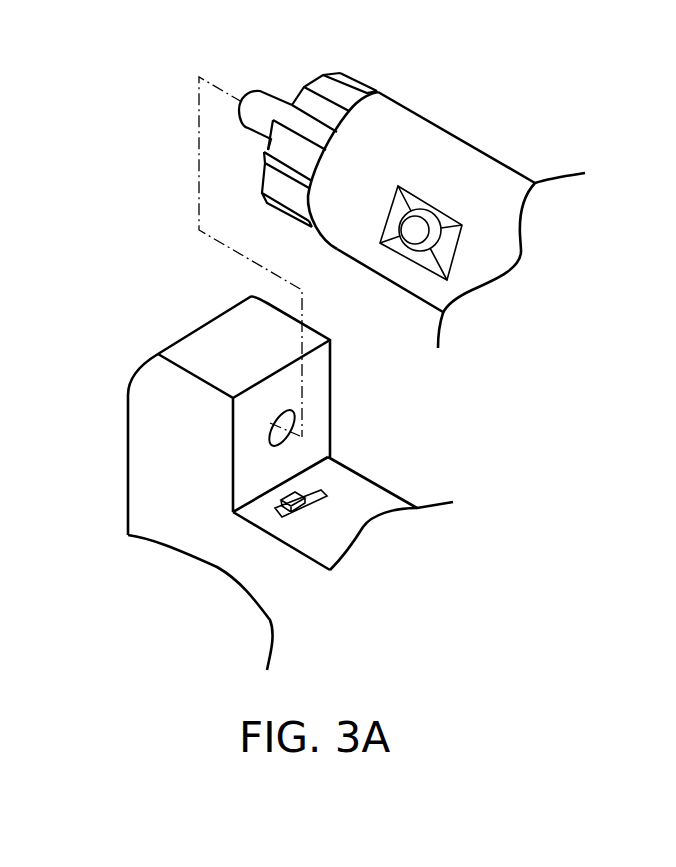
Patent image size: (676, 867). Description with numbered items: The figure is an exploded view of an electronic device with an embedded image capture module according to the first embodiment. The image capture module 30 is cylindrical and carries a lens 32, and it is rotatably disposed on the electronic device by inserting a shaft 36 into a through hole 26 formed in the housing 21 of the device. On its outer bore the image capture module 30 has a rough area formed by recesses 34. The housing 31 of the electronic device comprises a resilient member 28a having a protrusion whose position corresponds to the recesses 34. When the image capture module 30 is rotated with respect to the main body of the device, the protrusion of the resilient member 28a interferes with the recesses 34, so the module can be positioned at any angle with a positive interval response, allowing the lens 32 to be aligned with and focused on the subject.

The housing 21 is at (167, 457).
The through hole 26 is at (270, 437).
The resilient member 28a is at (285, 500).
The image capture module 30 is at (427, 181).
The housing 31 is at (392, 152).
The lens 32 is at (417, 230).
The recesses 34 is at (340, 93).
The shaft 36 is at (263, 103).